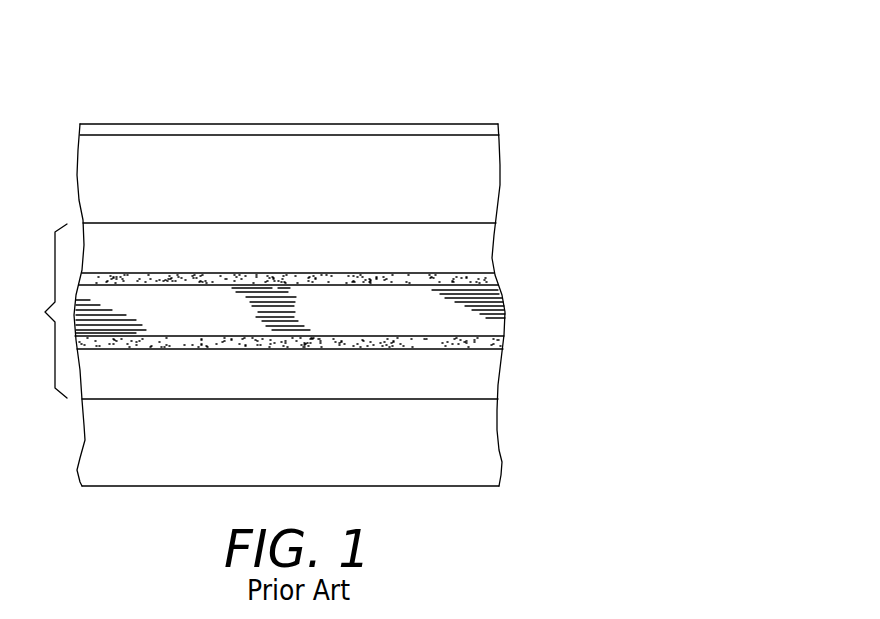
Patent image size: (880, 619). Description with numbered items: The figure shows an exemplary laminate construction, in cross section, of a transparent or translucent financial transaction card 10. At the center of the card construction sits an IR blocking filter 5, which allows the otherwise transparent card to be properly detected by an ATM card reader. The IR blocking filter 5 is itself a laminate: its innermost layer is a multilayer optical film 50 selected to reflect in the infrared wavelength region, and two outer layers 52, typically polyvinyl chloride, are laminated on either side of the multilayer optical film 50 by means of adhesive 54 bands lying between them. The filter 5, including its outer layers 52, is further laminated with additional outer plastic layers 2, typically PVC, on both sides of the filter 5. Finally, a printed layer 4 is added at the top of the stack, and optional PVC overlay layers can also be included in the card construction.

The financial transaction card 10 is at (108, 72).
The printed layer 4 is at (479, 129).
The outer plastic layers 2 is at (482, 178).
The IR blocking filter 5 is at (47, 311).
The outer layers 52 is at (482, 243).
The adhesive 54 is at (488, 282).
The multilayer optical film 50 is at (483, 315).